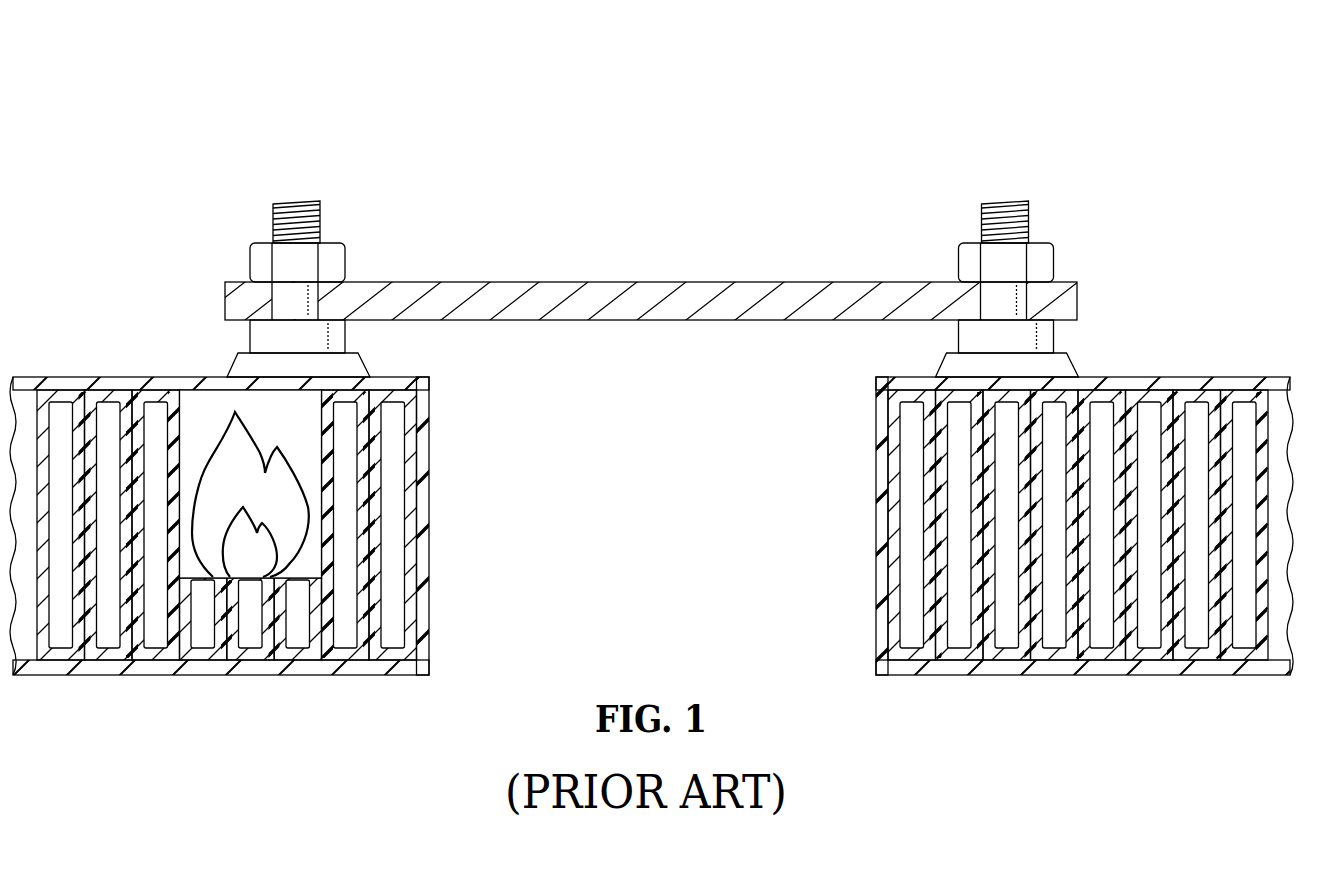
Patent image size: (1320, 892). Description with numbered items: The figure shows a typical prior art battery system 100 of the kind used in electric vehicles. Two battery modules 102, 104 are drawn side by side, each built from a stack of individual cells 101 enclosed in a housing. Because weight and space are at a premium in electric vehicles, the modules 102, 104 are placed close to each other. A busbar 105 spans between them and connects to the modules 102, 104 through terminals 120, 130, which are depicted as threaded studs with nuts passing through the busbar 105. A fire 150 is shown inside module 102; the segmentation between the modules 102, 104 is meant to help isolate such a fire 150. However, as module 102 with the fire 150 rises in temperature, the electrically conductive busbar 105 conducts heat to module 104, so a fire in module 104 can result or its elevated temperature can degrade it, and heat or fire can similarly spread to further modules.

The battery module (prior art) 100 is at (651, 392).
The cell 101 is at (108, 640).
The battery module 102 is at (116, 341).
The battery module 104 is at (1188, 341).
The busbar 105 is at (652, 282).
The terminal 120 is at (300, 203).
The terminal 130 is at (1007, 203).
The fire 150 is at (209, 438).